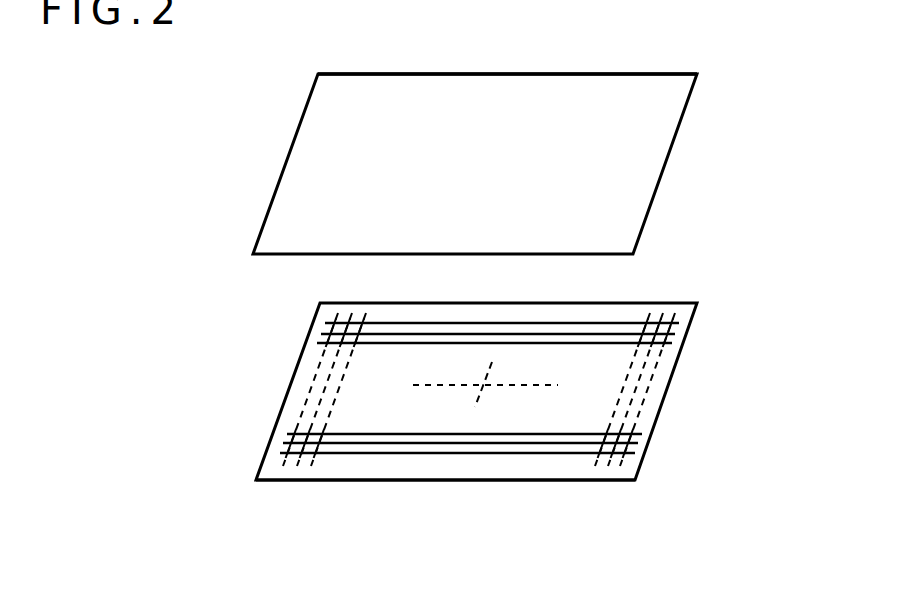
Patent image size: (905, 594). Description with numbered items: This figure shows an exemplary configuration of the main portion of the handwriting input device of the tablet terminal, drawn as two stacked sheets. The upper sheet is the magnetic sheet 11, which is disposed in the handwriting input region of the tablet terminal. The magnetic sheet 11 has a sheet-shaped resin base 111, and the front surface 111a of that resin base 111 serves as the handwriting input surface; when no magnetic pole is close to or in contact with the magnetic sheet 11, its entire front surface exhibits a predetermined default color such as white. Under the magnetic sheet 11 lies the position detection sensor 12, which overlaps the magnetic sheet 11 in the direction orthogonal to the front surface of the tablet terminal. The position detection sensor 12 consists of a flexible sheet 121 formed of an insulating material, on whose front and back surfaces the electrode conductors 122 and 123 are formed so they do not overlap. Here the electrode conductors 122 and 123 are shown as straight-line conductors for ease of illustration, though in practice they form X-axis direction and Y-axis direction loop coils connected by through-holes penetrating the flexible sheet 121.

The magnetic sheet 11 is at (643, 160).
The sheet-shaped resin base 111 is at (448, 85).
The front surface 111a is at (587, 85).
The position detection sensor 12 is at (679, 360).
The flexible sheet 121 is at (628, 470).
The electrode conductor 122 is at (487, 323).
The electrode conductor 123 is at (310, 394).